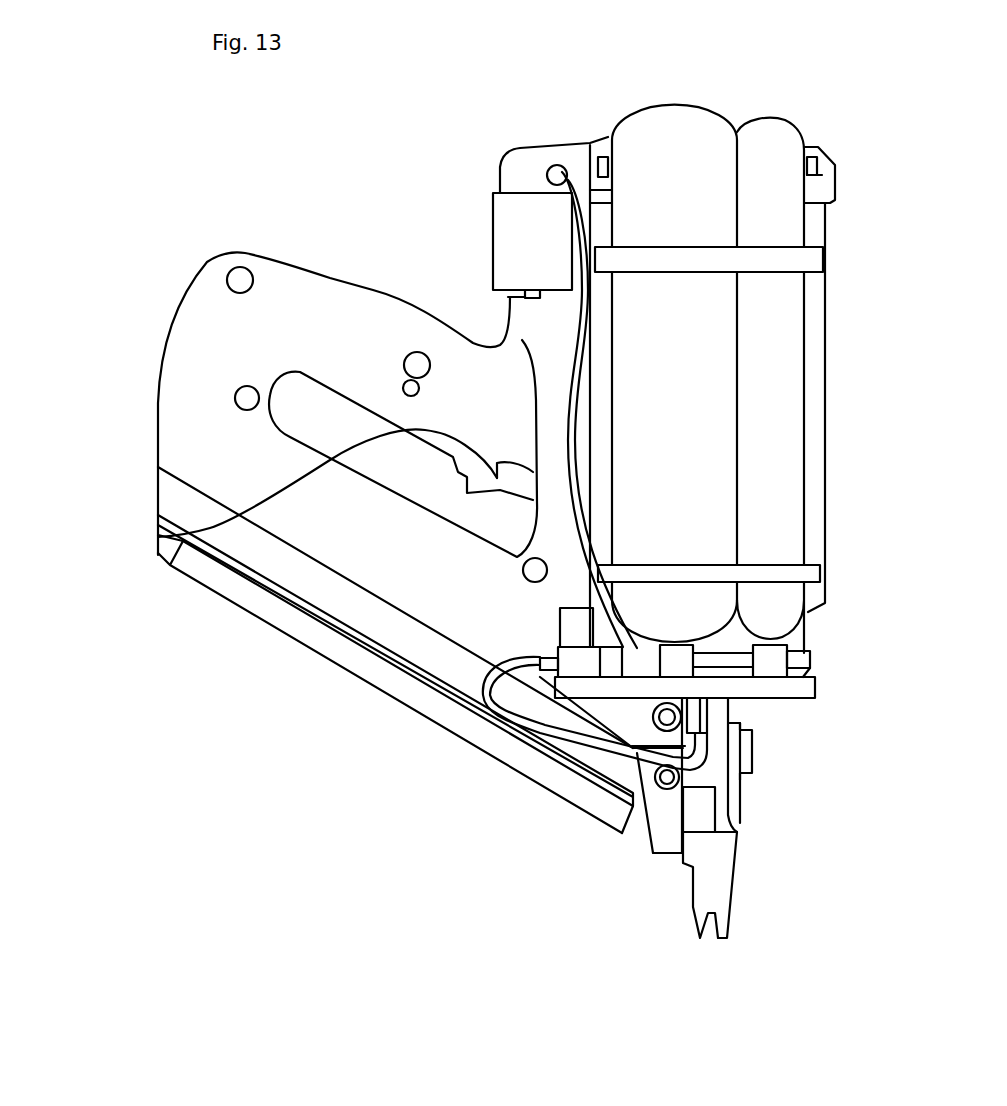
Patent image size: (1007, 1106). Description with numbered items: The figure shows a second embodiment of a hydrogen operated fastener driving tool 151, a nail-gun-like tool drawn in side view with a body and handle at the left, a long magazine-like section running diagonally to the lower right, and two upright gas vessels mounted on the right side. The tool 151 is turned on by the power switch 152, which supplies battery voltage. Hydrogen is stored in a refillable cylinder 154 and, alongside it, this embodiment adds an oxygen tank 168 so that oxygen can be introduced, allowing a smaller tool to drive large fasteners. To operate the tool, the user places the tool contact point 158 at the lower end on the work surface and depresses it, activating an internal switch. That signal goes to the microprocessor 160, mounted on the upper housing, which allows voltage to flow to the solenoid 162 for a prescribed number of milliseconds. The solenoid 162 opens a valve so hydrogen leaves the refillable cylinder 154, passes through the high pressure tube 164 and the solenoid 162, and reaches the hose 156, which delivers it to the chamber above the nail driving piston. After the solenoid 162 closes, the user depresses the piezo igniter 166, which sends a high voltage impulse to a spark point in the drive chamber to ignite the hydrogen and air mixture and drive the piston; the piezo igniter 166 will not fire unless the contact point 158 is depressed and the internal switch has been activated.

The hydrogen operated fastener driving tool 151 is at (187, 297).
The power switch 152 is at (507, 297).
The refillable cylinder 154 is at (665, 128).
The hose 156 is at (556, 167).
The tool contact point 158 is at (717, 878).
The microprocessor 160 is at (500, 213).
The solenoid 162 is at (545, 682).
The high pressure tube 164 is at (750, 752).
The piezo igniter 166 is at (158, 537).
The oxygen tank 168 is at (758, 140).